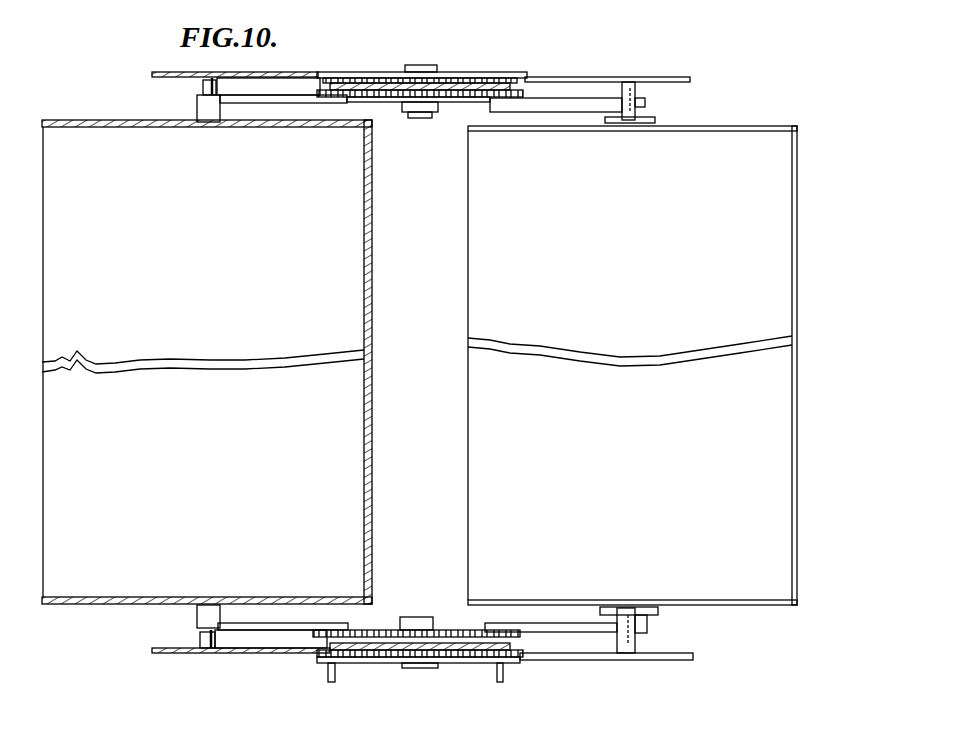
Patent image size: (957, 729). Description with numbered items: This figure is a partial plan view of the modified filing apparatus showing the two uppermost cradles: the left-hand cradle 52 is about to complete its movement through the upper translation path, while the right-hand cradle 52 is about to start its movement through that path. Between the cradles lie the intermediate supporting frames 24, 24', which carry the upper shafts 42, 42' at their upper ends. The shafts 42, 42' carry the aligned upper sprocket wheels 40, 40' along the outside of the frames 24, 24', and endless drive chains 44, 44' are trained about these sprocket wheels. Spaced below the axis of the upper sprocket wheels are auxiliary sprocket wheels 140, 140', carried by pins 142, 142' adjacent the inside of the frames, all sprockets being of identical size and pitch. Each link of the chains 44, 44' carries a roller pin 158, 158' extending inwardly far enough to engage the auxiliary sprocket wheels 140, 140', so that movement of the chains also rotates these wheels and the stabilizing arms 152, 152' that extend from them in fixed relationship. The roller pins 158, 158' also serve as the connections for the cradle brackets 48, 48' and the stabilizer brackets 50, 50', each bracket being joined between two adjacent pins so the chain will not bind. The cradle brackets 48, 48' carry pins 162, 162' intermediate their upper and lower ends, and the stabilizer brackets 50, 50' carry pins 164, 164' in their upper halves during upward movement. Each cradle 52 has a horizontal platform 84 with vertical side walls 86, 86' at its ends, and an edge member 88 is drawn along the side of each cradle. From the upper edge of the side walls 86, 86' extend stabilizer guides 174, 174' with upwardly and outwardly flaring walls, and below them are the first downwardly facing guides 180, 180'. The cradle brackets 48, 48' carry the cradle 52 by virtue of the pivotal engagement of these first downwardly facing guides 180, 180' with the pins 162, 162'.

The intermediate supporting frame 24 is at (394, 669).
The intermediate supporting frame 24' is at (607, 64).
The upper sprocket wheel 40 is at (418, 663).
The upper sprocket wheel 40' is at (424, 69).
The upper shaft 42 is at (425, 680).
The upper shaft 42' is at (434, 54).
The endless drive chain 44 is at (515, 680).
The endless drive chain 44' is at (422, 62).
The cradle bracket 48 is at (241, 662).
The cradle bracket 48' is at (213, 65).
The stabilizer bracket 50 is at (606, 672).
The stabilizer bracket 50' is at (666, 61).
The cradle 52 is at (455, 258).
The horizontal platform 84 is at (240, 314).
The vertical side wall 86 is at (538, 365).
The vertical side wall 86' is at (485, 146).
The panel edge member 88 is at (375, 173).
The auxiliary sprocket wheel 140 is at (396, 595).
The auxiliary sprocket wheel 140' is at (451, 117).
The pin 142 is at (425, 605).
The pin 142' is at (418, 123).
The stabilizing arm 152 is at (417, 599).
The stabilizing arm 152' is at (421, 129).
The roller pin 158 is at (544, 645).
The roller pin 158' is at (514, 127).
The pin 162 is at (167, 639).
The pin 162' is at (155, 91).
The pin 164 is at (673, 632).
The pin 164' is at (666, 101).
The stabilizer guide 174 is at (647, 619).
The stabilizer guide 174' is at (633, 140).
The first downwardly facing guide 180 is at (233, 626).
The first downwardly facing guide 180' is at (237, 121).